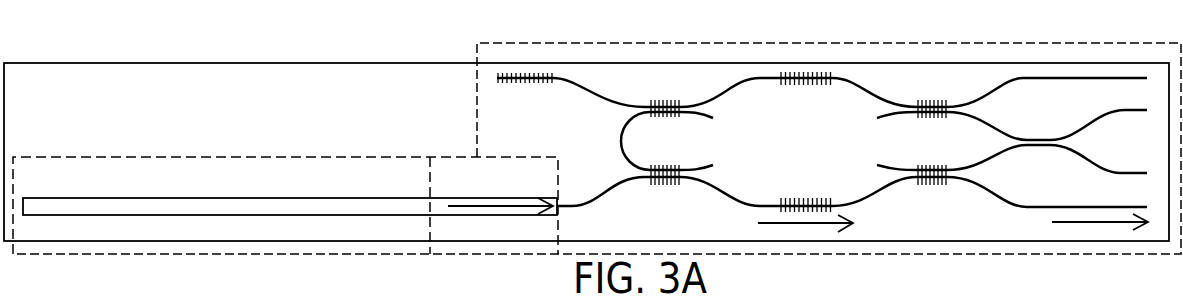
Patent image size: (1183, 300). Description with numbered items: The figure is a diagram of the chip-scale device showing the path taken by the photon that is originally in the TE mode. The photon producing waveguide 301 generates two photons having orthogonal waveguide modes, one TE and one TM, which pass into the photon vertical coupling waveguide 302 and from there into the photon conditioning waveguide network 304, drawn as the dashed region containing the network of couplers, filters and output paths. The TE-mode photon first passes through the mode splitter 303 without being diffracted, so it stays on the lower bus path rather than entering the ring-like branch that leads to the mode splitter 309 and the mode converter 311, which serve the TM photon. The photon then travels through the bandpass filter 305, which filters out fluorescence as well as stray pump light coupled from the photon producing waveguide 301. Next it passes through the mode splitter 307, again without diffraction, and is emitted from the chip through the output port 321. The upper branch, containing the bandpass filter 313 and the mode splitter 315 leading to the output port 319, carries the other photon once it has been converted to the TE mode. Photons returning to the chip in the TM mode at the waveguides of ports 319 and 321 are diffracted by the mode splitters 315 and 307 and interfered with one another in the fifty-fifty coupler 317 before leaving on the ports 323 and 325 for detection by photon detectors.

The photon producing waveguide 301 is at (208, 157).
The photon vertical coupling waveguide 302 is at (440, 157).
The mode splitter 303 is at (670, 186).
The photon conditioning waveguide network 304 is at (477, 46).
The bandpass filter 305 is at (810, 199).
The mode splitter 307 is at (940, 186).
The mode splitter 309 is at (668, 104).
The mode converter 311 is at (525, 84).
The bandpass filter 313 is at (808, 86).
The mode splitter 315 is at (932, 100).
The 50/50 coupler 317 is at (1043, 139).
The output port 319 is at (1127, 78).
The output port 321 is at (1053, 206).
The port 323 is at (1127, 112).
The port 325 is at (1122, 176).